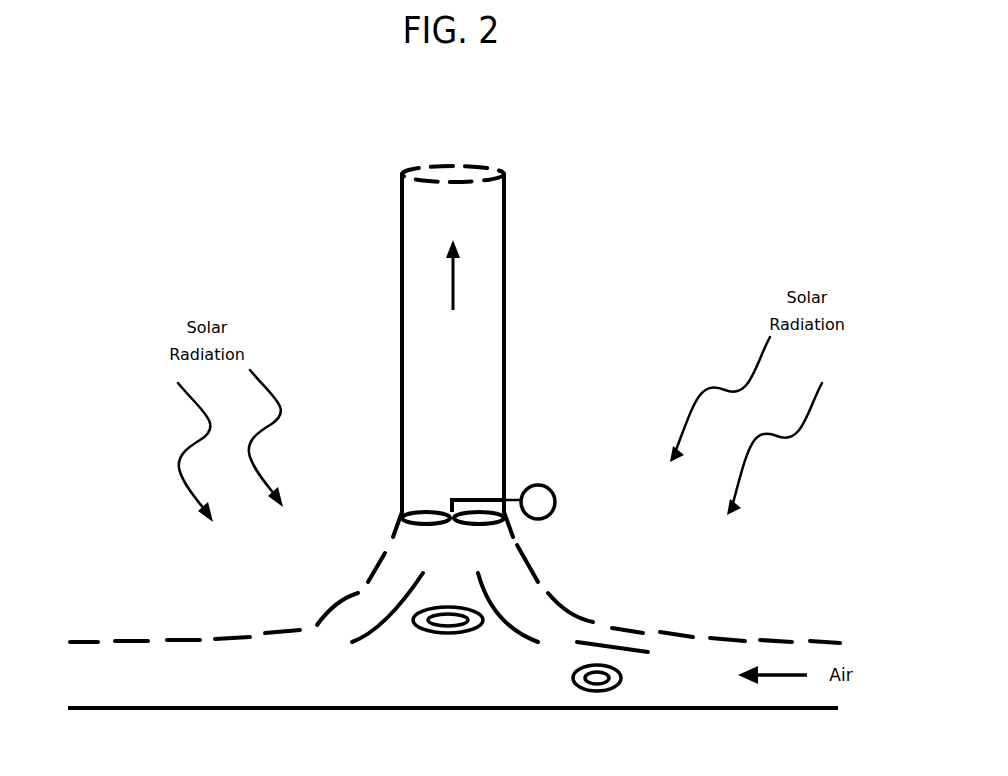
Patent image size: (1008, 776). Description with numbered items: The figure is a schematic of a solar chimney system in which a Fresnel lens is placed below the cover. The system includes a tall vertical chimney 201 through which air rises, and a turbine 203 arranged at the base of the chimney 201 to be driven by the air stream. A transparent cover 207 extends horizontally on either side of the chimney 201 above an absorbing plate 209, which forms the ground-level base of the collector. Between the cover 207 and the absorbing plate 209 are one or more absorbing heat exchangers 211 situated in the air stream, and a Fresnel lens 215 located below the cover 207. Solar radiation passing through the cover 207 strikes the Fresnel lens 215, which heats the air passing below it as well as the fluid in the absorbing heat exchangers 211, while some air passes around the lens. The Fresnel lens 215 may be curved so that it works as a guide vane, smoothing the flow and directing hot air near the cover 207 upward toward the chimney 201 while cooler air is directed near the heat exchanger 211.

The chimney 201 is at (505, 313).
The turbine 203 is at (427, 510).
The transparent cover 207 is at (200, 637).
The absorbing plate 209 is at (335, 710).
The absorbing heat exchanger 211 is at (433, 633).
The Fresnel lens 215 is at (388, 612).